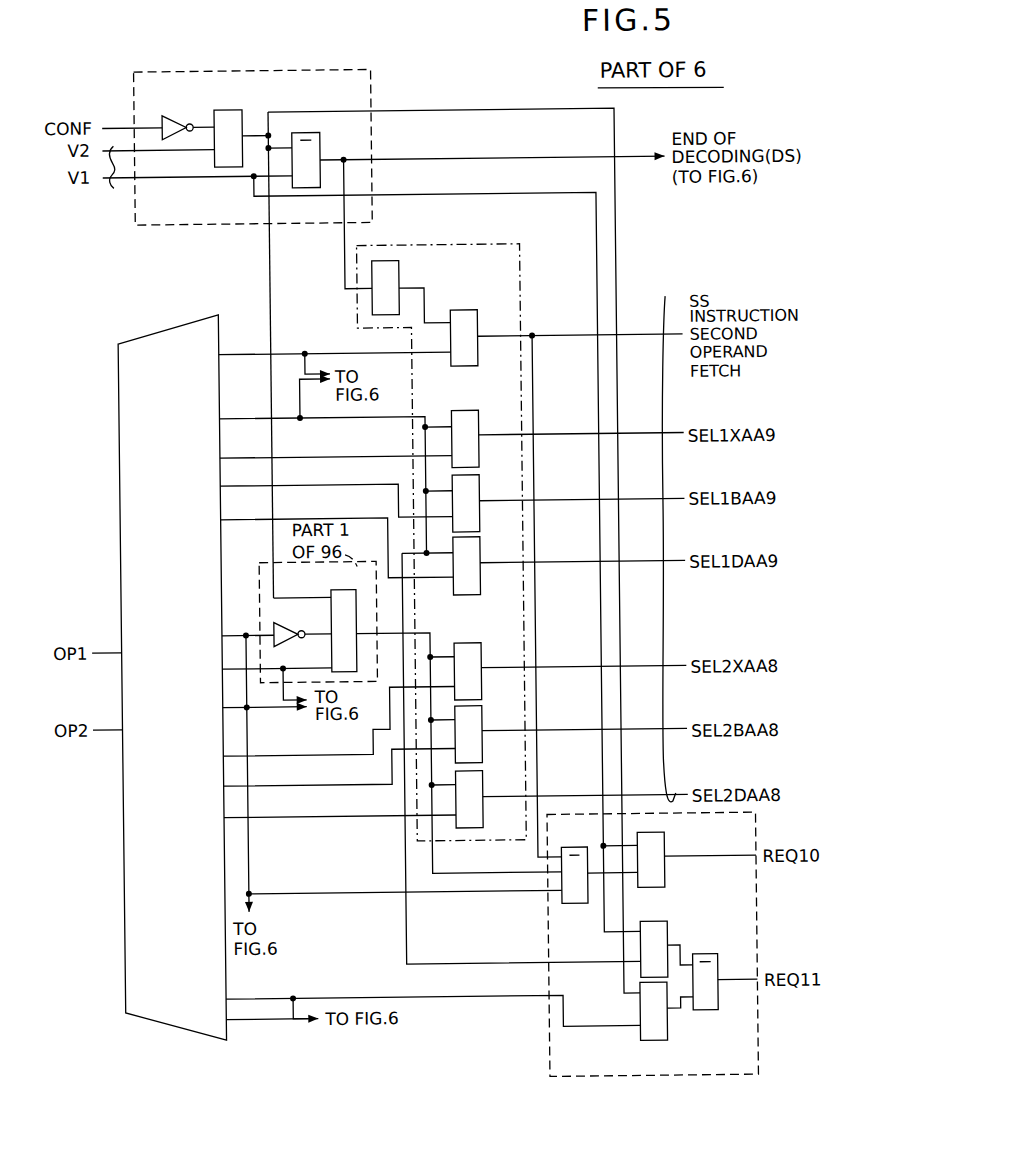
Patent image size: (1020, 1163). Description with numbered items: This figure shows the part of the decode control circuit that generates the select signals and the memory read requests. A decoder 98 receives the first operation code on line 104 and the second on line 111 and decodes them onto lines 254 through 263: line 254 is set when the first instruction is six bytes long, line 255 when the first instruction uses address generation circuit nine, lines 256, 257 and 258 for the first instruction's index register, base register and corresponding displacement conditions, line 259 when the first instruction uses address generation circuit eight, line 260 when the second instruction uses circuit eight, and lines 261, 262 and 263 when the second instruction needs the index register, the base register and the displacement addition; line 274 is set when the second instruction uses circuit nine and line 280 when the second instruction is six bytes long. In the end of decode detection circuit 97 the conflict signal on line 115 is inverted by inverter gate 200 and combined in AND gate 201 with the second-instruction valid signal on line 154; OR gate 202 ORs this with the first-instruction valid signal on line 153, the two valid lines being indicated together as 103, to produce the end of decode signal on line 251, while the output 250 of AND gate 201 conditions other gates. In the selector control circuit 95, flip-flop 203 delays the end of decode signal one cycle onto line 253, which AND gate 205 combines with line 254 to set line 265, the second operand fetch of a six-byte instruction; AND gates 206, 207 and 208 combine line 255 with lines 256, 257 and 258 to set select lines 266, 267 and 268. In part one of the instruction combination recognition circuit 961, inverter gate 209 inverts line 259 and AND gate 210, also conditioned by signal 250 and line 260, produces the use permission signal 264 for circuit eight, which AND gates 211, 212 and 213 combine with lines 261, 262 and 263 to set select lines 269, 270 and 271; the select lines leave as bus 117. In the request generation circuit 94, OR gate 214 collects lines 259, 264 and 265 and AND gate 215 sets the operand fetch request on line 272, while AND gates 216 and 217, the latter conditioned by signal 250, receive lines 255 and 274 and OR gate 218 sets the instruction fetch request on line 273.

The end of decode detection circuit 97 is at (174, 68).
The signal line 115 is at (121, 122).
The V1/V2 signal lines 103 is at (121, 186).
The inverter gate 200 is at (198, 112).
The AND gate 201 is at (242, 107).
The OR gate 202 is at (325, 131).
The signal line 154 is at (176, 148).
The signal line 153 is at (226, 174).
The output signal 250 is at (438, 109).
The signal line 251 is at (463, 157).
The selector control circuit 95 is at (411, 244).
The flip-flop 203 is at (402, 267).
The signal line 253 is at (441, 310).
The AND gate 205 is at (479, 366).
The AND gate 206 is at (480, 413).
The AND gate 207 is at (482, 490).
The AND gate 208 is at (482, 556).
The signal line 265 is at (560, 335).
The signal line SEL1XAA9 266 is at (560, 434).
The signal line SEL1BAA9 267 is at (562, 500).
The signal line SEL1DAA9 268 is at (561, 562).
The signal bus 117 is at (668, 535).
The decoder 98 is at (171, 326).
The OP1 input line 104 is at (102, 648).
The OP2 input line 111 is at (97, 727).
The signal line 254 is at (321, 351).
The signal line 255 is at (328, 416).
The signal line 256 is at (387, 455).
The signal line 257 is at (347, 483).
The signal line 258 is at (342, 517).
The signal line 259 is at (248, 738).
The signal line 260 is at (282, 666).
The signal line 261 is at (300, 760).
The signal line 262 is at (300, 787).
The signal line 263 is at (321, 816).
The use permission signal 264 is at (431, 639).
The instruction combination recognition circuit (part I) 961 is at (259, 568).
The inverter gate 209 is at (285, 631).
The AND gate 210 is at (330, 590).
The AND gate 211 is at (478, 647).
The AND gate 212 is at (480, 720).
The AND gate 213 is at (480, 785).
The signal line SEL2XAA8 269 is at (564, 666).
The signal line SEL2BAA8 270 is at (564, 730).
The signal line SEL2DAA8 271 is at (563, 796).
The request generation circuit 94 is at (560, 1077).
The OR gate 214 is at (571, 848).
The AND gate 215 is at (664, 845).
The AND gate 216 is at (664, 923).
The AND gate 217 is at (636, 1042).
The OR gate 218 is at (706, 956).
The signal line 272 is at (712, 858).
The signal line 273 is at (708, 988).
The signal line 274 is at (333, 996).
The signal line 280 is at (262, 1018).